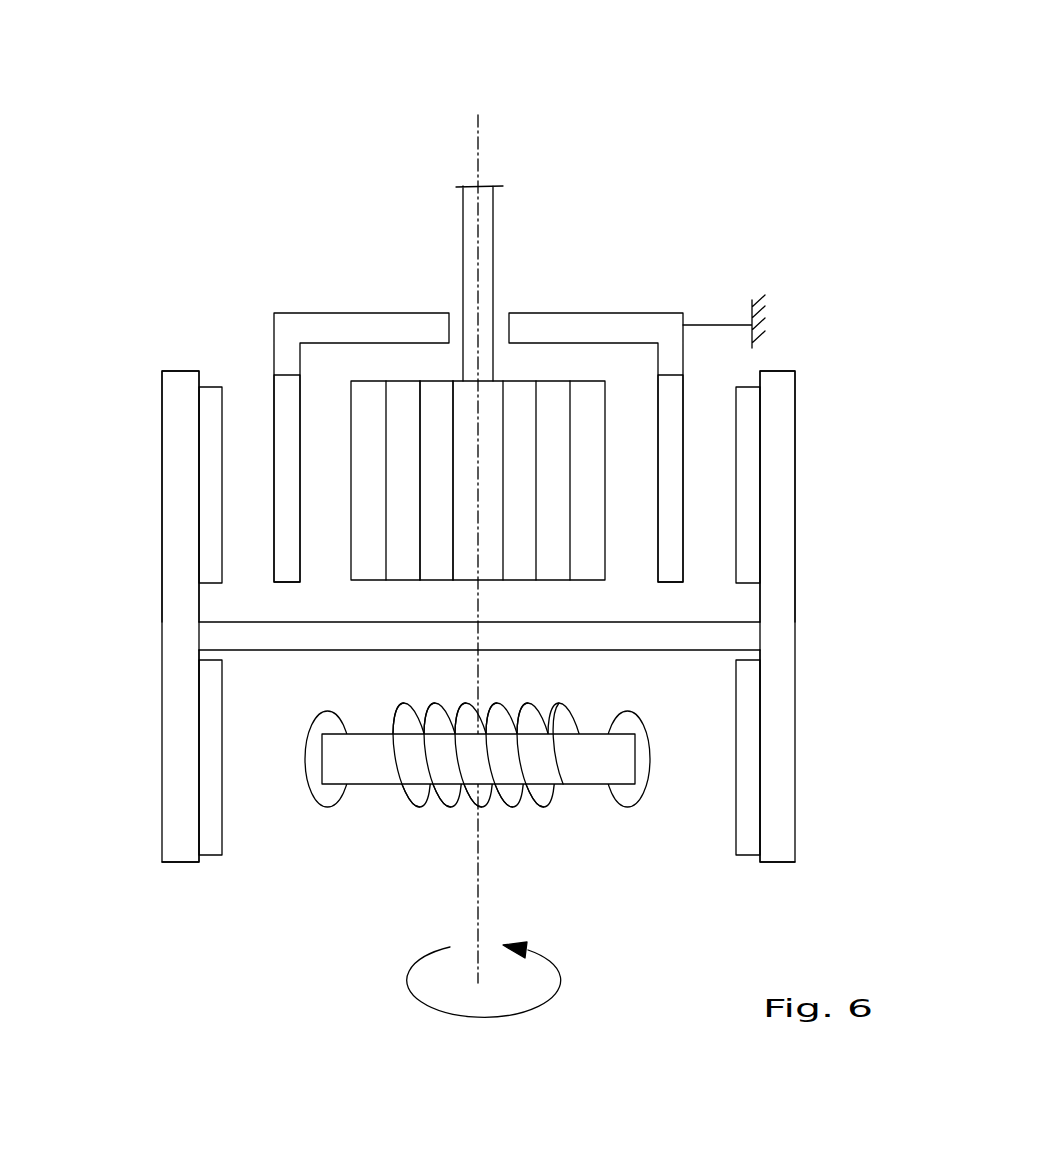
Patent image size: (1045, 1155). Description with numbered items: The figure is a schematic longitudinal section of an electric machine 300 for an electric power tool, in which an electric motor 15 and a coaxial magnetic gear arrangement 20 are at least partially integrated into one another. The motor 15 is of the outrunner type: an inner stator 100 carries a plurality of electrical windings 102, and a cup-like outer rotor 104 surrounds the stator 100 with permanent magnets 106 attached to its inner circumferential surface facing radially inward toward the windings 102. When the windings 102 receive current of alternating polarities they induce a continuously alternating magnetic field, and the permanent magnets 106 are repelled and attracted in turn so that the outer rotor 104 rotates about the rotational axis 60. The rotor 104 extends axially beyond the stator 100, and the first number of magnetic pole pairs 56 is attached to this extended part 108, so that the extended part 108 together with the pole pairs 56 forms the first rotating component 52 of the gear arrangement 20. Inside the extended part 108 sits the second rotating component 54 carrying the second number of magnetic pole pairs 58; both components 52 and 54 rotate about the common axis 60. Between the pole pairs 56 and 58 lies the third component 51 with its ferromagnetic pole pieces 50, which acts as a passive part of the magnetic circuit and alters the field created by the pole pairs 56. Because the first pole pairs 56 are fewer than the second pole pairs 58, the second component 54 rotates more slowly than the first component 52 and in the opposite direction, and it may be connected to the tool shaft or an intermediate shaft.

The electric machine 300 is at (755, 128).
The coaxial magnetic gear arrangement 20 is at (850, 318).
The rotational axis 60 is at (478, 150).
The third component 51 is at (328, 322).
The ferromagnetic pole pieces 50 is at (288, 481).
The second rotating component 54 is at (517, 378).
The second number of magnetic pole pairs 58 is at (430, 442).
The first number of magnetic pole pairs 56 is at (210, 526).
The first rotating component 52 is at (178, 443).
The extended part of the rotor 108 is at (178, 568).
The permanent magnets 106 is at (212, 695).
The outer rotor 104 is at (180, 777).
The electric motor 15 is at (830, 698).
The inner stator 100 is at (443, 778).
The electrical windings 102 is at (477, 799).